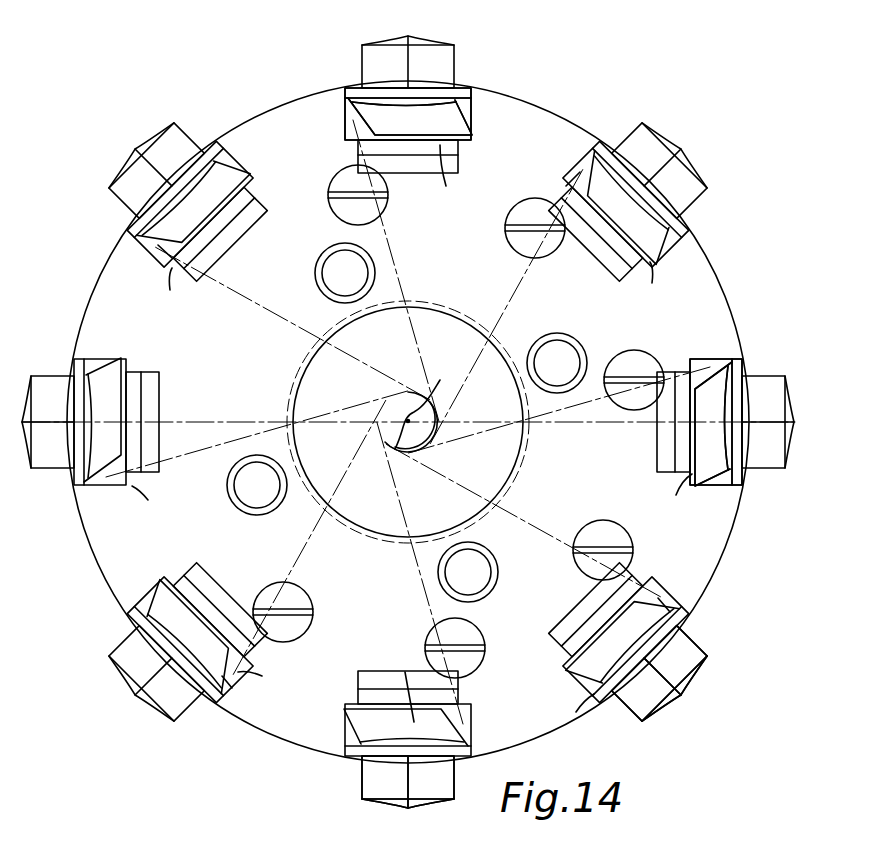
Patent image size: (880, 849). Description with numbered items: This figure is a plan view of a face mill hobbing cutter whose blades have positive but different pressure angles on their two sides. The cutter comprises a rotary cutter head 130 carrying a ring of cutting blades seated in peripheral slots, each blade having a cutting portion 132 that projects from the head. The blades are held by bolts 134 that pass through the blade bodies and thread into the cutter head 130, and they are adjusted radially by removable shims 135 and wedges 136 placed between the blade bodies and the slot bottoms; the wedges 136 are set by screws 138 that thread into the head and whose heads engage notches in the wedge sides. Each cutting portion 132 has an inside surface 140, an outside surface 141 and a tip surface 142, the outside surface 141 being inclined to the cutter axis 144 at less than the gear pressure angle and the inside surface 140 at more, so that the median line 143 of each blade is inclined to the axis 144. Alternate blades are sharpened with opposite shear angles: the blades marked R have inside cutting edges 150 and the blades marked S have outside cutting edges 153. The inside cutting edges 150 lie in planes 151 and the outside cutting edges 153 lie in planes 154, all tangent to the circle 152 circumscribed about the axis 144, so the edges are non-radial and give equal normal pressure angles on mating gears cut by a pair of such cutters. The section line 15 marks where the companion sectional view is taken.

The section line 15- 15 is at (795, 426).
The rotary cutter head 130 is at (322, 742).
The cutting portion 132 is at (138, 222).
The bolt 134 is at (414, 808).
The shim 135 is at (236, 183).
The wedge 136 is at (252, 218).
The screw 138 is at (381, 216).
The inside surface 140 is at (458, 716).
The outside surface 141 is at (446, 770).
The tip surface 142 is at (452, 738).
The median line 143 is at (437, 546).
The axis of the cutter 144 is at (418, 393).
The inside cutting edge 150 is at (575, 188).
The plane 151 is at (262, 308).
The circle 152 is at (422, 449).
The outside cutting edge 153 is at (346, 96).
The plane 154 is at (402, 290).
The blade with inside cutting edge R is at (410, 489).
The blade with outside cutting edge S is at (412, 433).